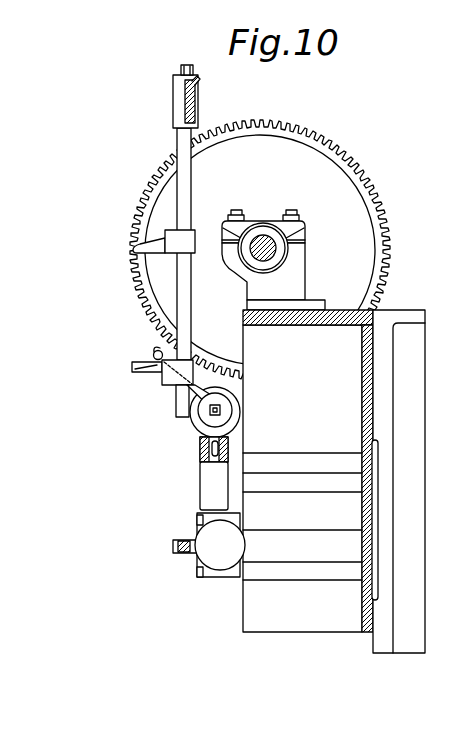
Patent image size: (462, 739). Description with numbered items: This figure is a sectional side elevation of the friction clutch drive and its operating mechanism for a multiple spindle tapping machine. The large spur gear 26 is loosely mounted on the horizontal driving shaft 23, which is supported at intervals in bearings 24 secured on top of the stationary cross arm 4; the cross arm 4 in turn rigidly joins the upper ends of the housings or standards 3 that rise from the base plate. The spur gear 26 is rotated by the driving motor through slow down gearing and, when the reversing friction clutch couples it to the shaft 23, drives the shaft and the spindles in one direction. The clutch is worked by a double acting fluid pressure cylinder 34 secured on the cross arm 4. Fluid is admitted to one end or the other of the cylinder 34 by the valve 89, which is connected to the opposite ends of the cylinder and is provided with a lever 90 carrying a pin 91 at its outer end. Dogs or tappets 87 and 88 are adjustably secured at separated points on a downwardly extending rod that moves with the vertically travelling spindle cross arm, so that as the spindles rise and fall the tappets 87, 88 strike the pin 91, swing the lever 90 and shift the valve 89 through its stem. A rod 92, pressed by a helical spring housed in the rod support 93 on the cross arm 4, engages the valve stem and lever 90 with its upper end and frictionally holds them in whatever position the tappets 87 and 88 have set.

The housing 3 is at (398, 481).
The cross arm 4 is at (308, 471).
The driving shaft 23 is at (277, 250).
The bearing 24 is at (288, 290).
The spur gear 26 is at (366, 184).
The fluid pressure cylinder 34 is at (209, 545).
The tappet 87 is at (138, 247).
The tappet 88 is at (162, 378).
The valve 89 is at (193, 425).
The lever 90 is at (229, 394).
The pin 91 is at (153, 355).
The rod 92 is at (202, 453).
The rod support 93 is at (202, 490).